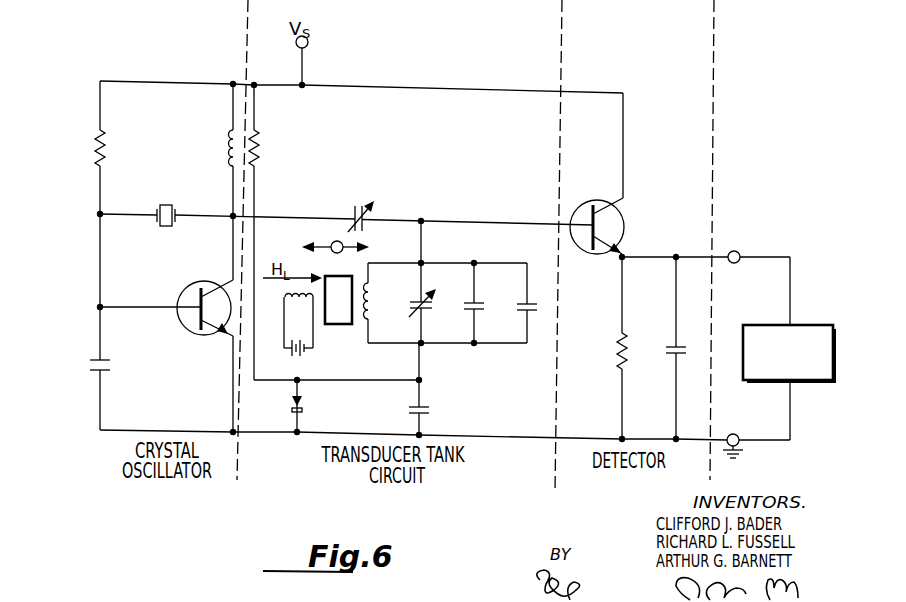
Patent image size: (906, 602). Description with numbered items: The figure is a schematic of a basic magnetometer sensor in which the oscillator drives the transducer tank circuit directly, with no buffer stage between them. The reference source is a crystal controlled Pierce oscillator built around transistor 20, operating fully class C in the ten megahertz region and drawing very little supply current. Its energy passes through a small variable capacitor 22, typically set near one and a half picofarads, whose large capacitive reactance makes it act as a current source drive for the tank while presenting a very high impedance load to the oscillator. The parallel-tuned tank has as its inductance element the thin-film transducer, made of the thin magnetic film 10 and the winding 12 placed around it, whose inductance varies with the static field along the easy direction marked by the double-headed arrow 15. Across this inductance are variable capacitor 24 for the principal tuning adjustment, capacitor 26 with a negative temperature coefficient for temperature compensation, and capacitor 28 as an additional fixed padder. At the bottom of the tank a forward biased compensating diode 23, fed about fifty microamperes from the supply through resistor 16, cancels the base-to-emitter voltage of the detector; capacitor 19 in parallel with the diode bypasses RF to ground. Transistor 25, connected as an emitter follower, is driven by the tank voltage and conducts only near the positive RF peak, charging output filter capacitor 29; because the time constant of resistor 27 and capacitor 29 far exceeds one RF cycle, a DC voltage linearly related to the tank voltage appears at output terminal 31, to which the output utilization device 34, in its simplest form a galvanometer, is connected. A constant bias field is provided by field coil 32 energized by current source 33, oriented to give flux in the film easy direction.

The thin magnetic film 10 is at (338, 325).
The winding 12 is at (371, 304).
The double-headed arrow 15 is at (370, 247).
The resistor 16 is at (258, 143).
The capacitor 19 is at (430, 410).
The transistor 20 is at (206, 335).
The variable capacitor 22 is at (367, 203).
The compensating diode 23 is at (304, 404).
The variable capacitor 24 is at (425, 312).
The transistor 25 is at (592, 200).
The capacitor 26 is at (478, 300).
The resistor 27 is at (613, 353).
The capacitor 28 is at (522, 312).
The output filter capacitor 29 is at (672, 344).
The output terminal 31 is at (737, 252).
The field coil 32 is at (285, 297).
The current source 33 is at (291, 347).
The output utilization device 34 is at (755, 381).